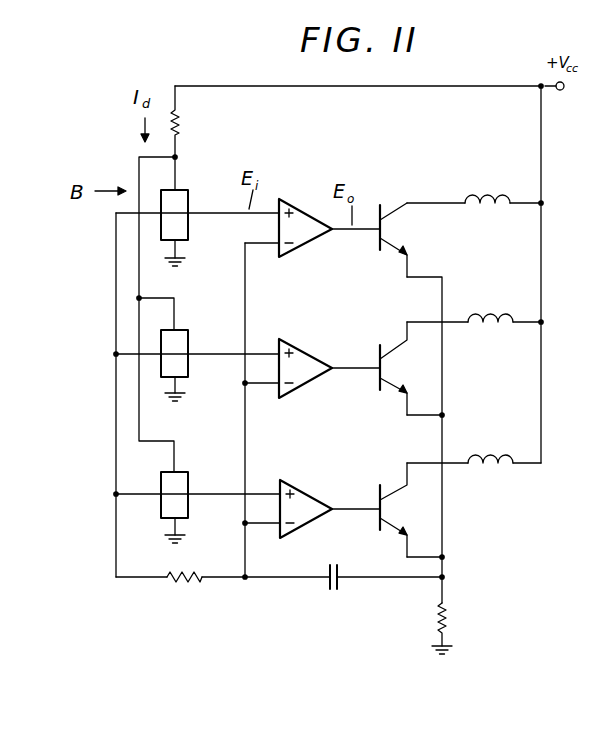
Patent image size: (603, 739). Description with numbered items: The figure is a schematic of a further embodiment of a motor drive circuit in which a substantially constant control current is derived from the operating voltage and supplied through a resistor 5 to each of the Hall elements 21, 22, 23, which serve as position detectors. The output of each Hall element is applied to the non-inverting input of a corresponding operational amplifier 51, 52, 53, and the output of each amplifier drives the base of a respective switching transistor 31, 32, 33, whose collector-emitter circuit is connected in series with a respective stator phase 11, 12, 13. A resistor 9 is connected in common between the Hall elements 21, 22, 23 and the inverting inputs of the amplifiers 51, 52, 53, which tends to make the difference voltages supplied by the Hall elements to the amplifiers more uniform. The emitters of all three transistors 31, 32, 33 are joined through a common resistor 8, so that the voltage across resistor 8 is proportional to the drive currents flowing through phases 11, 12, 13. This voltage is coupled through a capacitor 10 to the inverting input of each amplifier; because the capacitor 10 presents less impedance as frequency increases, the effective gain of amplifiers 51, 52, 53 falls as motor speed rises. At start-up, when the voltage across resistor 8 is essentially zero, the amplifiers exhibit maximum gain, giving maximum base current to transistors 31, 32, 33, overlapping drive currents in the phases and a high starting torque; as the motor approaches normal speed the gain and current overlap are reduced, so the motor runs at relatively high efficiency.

The resistor 5 is at (179, 122).
The Hall element 21 is at (182, 200).
The Hall element 22 is at (180, 340).
The Hall element 23 is at (181, 481).
The amplifier 51 is at (308, 252).
The amplifier 52 is at (303, 392).
The amplifier 53 is at (311, 520).
The transistor 31 is at (377, 250).
The transistor 32 is at (380, 390).
The transistor 33 is at (380, 530).
The phase 11 is at (490, 206).
The phase 12 is at (498, 326).
The phase 13 is at (498, 467).
The resistor 9 is at (190, 580).
The capacitor 10 is at (332, 591).
The resistor 8 is at (449, 620).